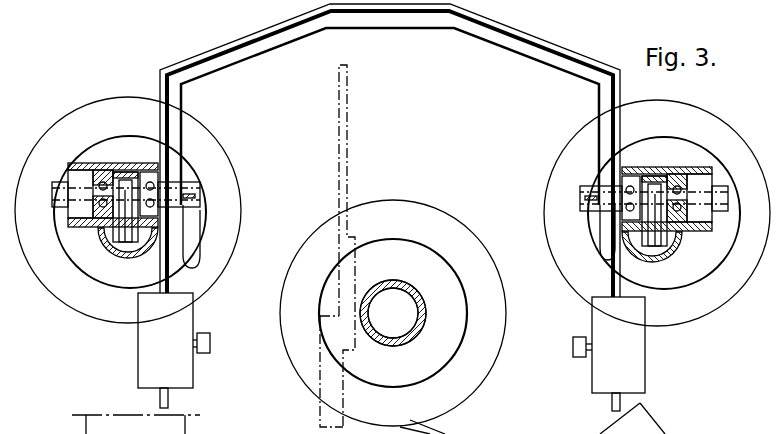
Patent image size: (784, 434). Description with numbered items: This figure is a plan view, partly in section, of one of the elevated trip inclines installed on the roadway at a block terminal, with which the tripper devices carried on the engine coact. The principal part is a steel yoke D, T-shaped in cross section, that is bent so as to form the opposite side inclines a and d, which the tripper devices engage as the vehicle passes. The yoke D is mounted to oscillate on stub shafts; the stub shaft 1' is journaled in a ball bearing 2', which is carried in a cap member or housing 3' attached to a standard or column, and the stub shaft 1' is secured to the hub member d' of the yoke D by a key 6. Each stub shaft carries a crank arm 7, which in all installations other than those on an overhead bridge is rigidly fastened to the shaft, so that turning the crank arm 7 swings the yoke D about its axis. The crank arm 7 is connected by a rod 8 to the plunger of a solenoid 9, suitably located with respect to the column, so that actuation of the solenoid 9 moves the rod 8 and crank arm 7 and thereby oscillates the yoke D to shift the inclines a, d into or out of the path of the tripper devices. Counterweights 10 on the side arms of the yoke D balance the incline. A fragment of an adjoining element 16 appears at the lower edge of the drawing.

The yoke D is at (376, 8).
The frame side arm a is at (228, 52).
The side incline d is at (530, 35).
The hub member d' is at (399, 210).
The stub shaft 1' is at (390, 190).
The ball bearing 2' is at (393, 189).
The cap member or housing 3' is at (369, 222).
The key 6 is at (197, 202).
The crank arm 7 is at (124, 242).
The rod 8 is at (126, 252).
The solenoid 9 is at (80, 164).
The counterweight 10 is at (186, 312).
The support 16 is at (392, 418).